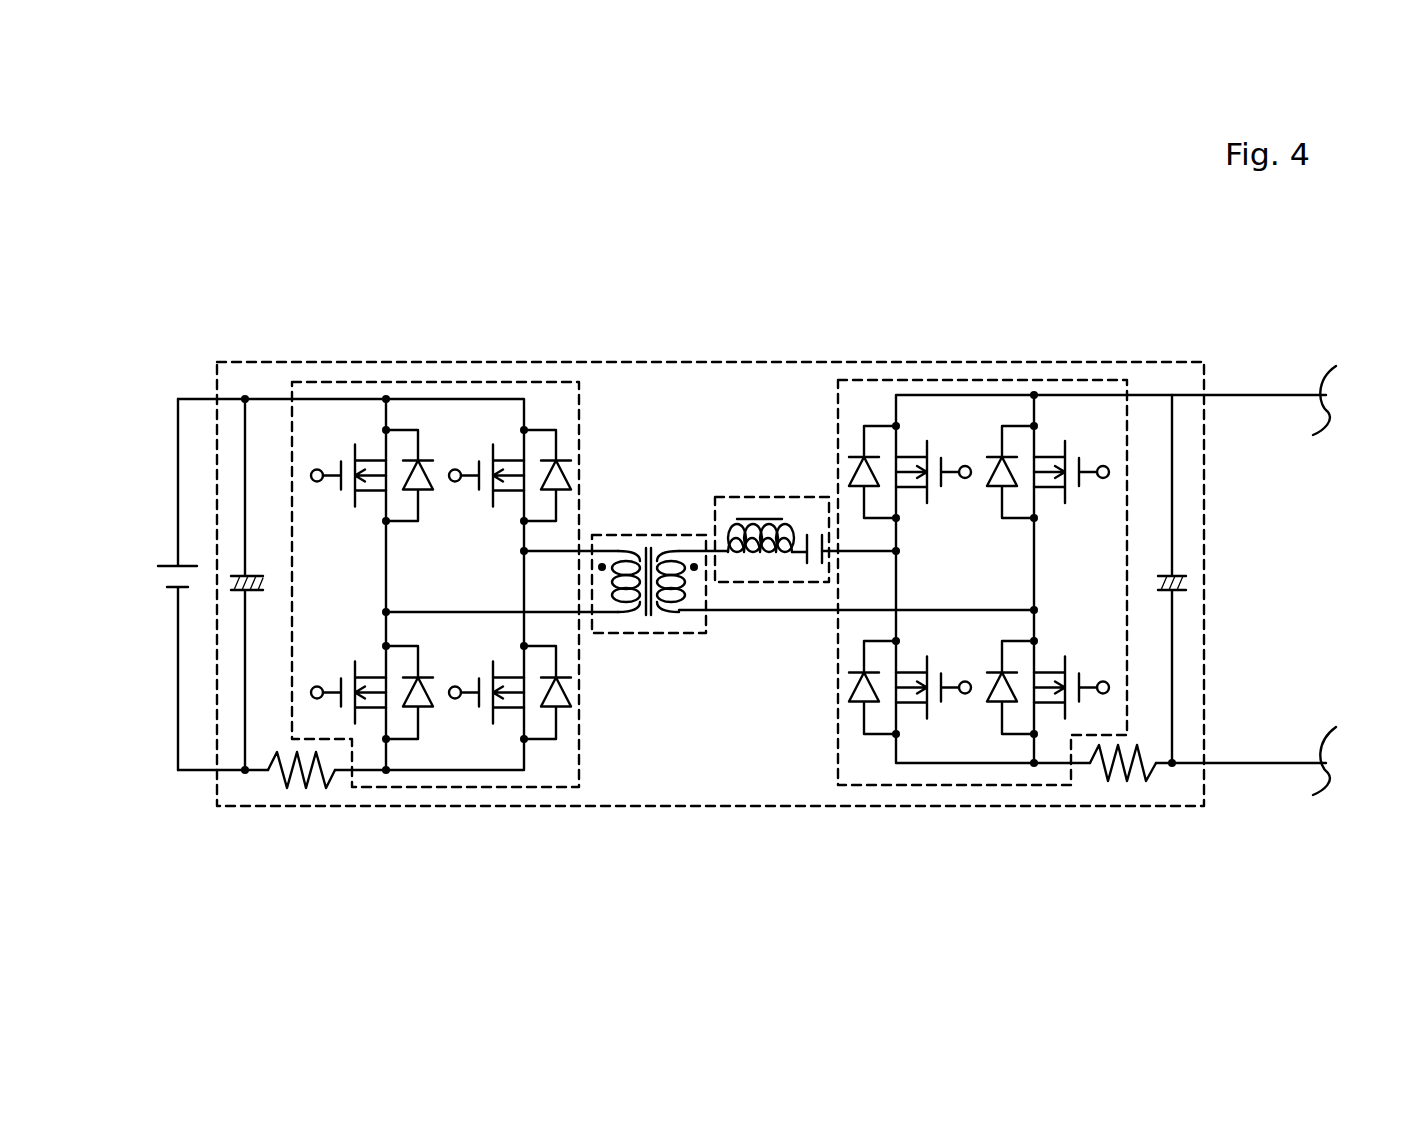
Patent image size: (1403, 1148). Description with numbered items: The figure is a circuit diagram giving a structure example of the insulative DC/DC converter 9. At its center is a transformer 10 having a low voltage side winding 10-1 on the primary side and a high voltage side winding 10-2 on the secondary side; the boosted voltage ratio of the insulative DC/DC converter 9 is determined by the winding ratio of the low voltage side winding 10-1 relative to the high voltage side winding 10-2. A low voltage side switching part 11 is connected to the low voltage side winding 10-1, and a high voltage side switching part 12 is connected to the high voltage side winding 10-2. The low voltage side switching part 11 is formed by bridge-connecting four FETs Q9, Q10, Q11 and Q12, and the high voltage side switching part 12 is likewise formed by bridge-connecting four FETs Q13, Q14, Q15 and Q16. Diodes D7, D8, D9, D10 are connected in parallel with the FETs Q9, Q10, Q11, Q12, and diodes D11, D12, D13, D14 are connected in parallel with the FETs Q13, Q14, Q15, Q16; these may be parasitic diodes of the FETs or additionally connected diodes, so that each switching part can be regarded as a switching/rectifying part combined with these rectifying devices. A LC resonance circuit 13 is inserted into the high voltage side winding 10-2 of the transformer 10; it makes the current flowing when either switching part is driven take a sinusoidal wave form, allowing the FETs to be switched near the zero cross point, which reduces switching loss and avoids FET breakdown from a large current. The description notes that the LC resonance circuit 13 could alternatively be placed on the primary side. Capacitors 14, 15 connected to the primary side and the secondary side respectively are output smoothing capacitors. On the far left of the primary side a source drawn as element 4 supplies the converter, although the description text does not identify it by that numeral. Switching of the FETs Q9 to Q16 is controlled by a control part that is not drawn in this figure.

The DC power supply (battery) 4 is at (170, 560).
The insulative DC/DC converter 9 is at (630, 362).
The transformer 10 is at (681, 597).
The low voltage side winding 10-1 is at (625, 623).
The high voltage side winding 10-2 is at (670, 623).
The low voltage side switching part 11 is at (557, 382).
The high voltage side switching part 12 is at (838, 742).
The LC resonance circuit 13 is at (750, 497).
The capacitor 14 is at (257, 567).
The capacitor 15 is at (1163, 567).
The FET Q9 is at (355, 430).
The FET Q10 is at (495, 430).
The FET Q11 is at (365, 731).
The FET Q12 is at (503, 731).
The FET Q13 is at (922, 430).
The FET Q14 is at (1067, 430).
The FET Q15 is at (923, 725).
The FET Q16 is at (1062, 725).
The diode D7 is at (428, 498).
The diode D8 is at (572, 478).
The diode D9 is at (433, 686).
The diode D10 is at (576, 718).
The diode D11 is at (852, 474).
The diode D12 is at (993, 498).
The diode D13 is at (853, 694).
The diode D14 is at (987, 680).